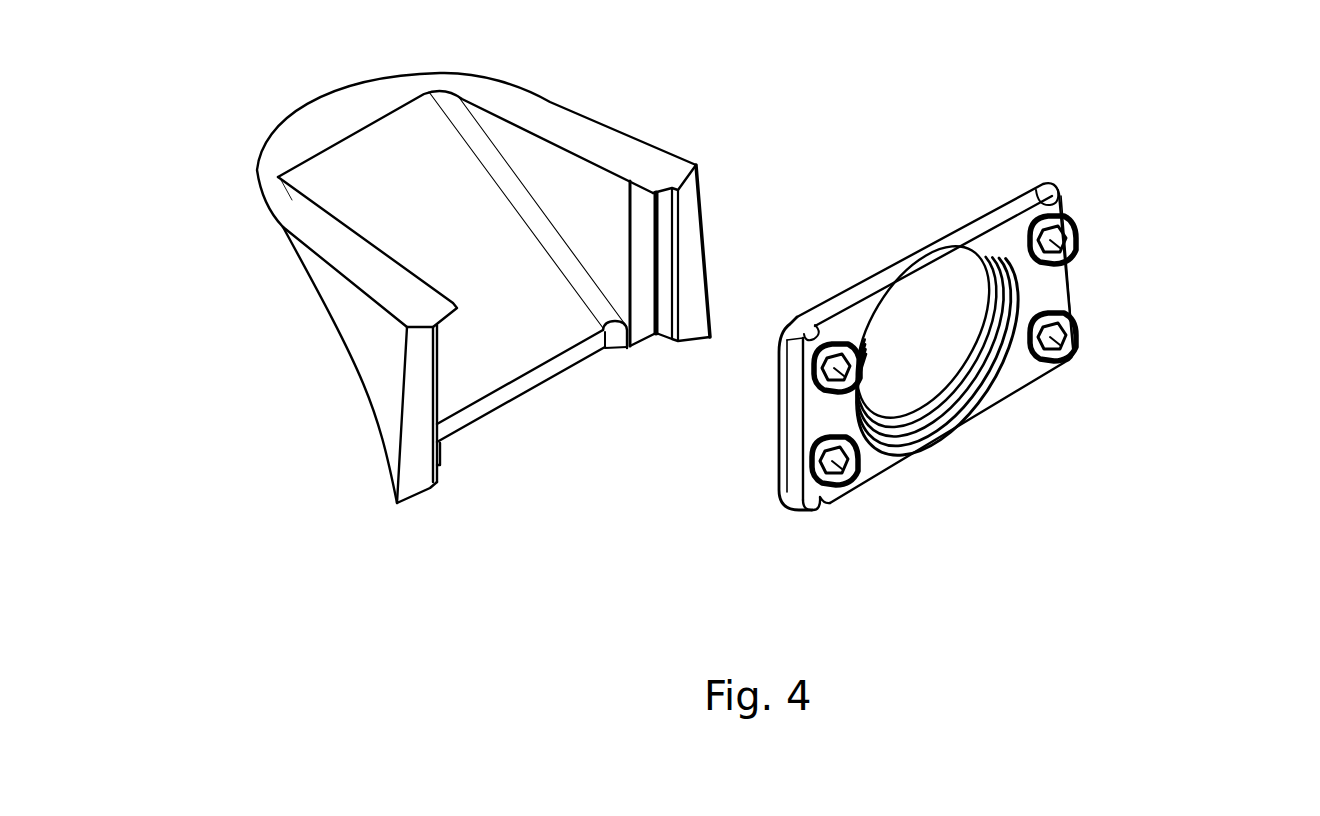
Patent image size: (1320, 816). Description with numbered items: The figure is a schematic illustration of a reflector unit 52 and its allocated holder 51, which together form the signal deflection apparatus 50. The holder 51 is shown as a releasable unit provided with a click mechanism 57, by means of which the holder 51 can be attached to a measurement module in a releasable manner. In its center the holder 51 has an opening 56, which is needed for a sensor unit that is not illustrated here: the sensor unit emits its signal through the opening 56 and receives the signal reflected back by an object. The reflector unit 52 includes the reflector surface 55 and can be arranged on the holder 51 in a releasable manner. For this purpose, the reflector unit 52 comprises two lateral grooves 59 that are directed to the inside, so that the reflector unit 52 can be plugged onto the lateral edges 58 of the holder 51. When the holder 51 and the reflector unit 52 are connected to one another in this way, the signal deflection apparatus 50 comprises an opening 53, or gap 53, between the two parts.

The signal deflection apparatus 50 is at (1243, 135).
The holder 51 is at (1003, 227).
The reflector unit 52 is at (291, 148).
The opening or gap 53 is at (547, 397).
The reflector surface 55 is at (472, 263).
The opening 56 is at (929, 363).
The click mechanism 57 is at (1077, 228).
The lateral edges 58 is at (1070, 293).
The lateral grooves 59 is at (665, 278).